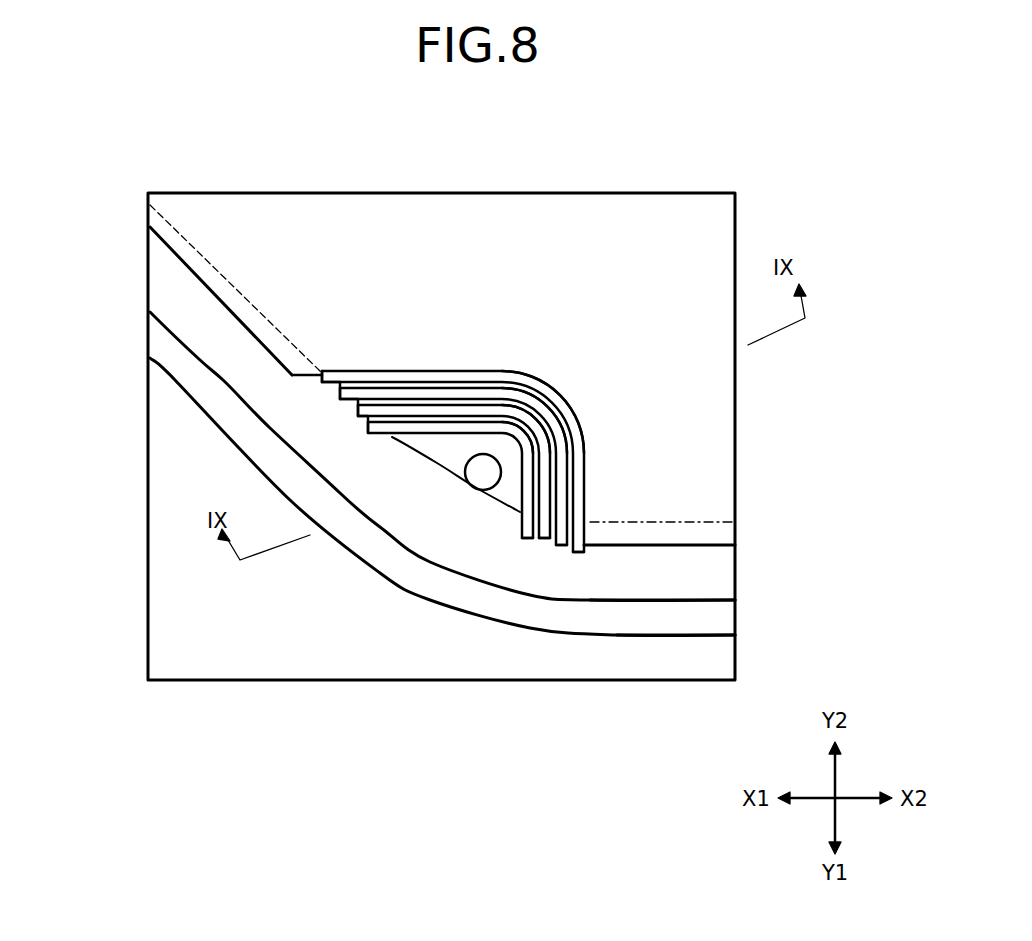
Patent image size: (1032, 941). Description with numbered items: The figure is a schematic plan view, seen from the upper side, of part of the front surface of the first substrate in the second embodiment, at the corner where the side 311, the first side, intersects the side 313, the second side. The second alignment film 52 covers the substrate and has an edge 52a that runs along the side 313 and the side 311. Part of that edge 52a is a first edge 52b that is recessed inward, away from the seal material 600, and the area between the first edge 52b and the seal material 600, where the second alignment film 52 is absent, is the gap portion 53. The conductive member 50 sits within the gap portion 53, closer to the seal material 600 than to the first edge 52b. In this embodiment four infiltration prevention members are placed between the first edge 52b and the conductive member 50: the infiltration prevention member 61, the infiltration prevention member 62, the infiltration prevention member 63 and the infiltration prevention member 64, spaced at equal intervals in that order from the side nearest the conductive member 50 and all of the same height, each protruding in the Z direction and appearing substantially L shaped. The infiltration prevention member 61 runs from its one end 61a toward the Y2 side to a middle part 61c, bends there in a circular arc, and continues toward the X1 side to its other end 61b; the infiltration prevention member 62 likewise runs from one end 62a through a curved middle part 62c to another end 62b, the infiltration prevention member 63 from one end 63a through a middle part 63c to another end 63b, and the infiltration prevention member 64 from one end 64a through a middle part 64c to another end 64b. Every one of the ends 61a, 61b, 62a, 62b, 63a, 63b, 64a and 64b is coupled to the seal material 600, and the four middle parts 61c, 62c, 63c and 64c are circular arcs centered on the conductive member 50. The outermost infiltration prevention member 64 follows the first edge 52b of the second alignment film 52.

The conductive member 50 is at (487, 492).
The second alignment film 52 is at (680, 421).
The edge 52a is at (195, 274).
The first edge 52b is at (318, 378).
The gap portion 53 is at (460, 465).
The infiltration prevention member 61 is at (531, 523).
The one end 61a is at (523, 539).
The other end 61b is at (368, 428).
The middle part 61c is at (517, 435).
The infiltration prevention member 62 is at (375, 406).
The one end 62a is at (542, 540).
The other end 62b is at (358, 410).
The middle part 62c is at (547, 400).
The infiltration prevention member 63 is at (562, 497).
The one end 63a is at (558, 546).
The other end 63b is at (340, 394).
The middle part 63c is at (538, 418).
The infiltration prevention member 64 is at (323, 373).
The one end 64a is at (578, 553).
The other end 64b is at (322, 378).
The middle part 64c is at (528, 428).
The side 311 is at (690, 635).
The side 313 is at (278, 487).
The seal material 600 is at (183, 311).